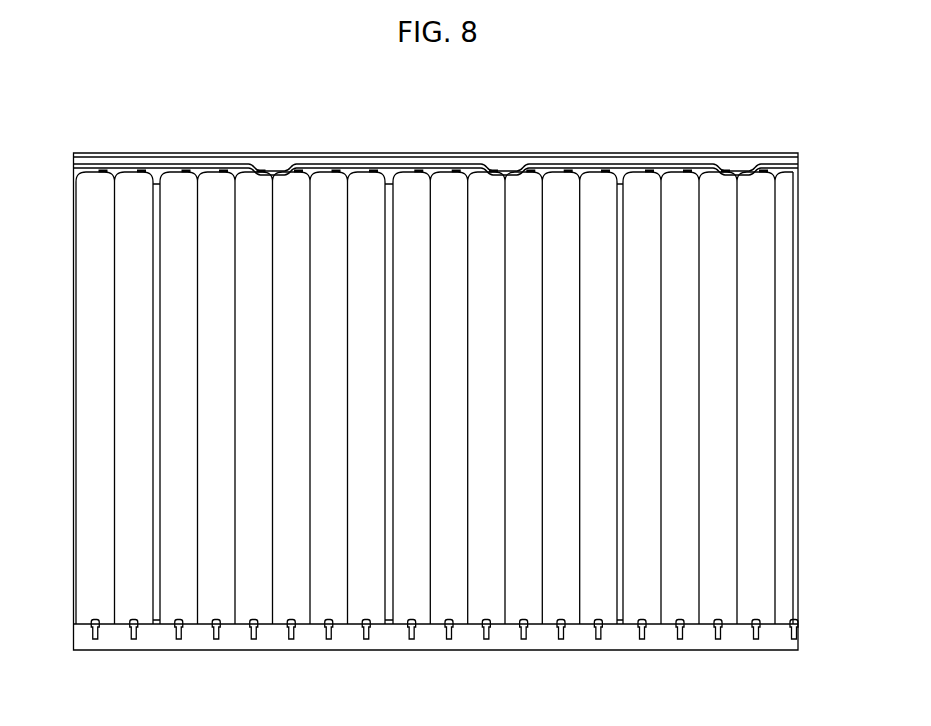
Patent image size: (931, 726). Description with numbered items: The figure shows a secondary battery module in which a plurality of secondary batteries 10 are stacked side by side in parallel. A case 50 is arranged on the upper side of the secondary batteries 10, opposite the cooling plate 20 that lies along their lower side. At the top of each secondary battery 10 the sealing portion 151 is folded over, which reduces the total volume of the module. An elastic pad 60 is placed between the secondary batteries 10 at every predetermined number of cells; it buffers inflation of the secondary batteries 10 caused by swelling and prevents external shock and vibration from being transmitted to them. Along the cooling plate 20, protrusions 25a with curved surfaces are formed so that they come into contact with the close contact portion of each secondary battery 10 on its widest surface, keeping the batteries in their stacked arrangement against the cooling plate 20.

The secondary battery 10 is at (568, 612).
The cooling plate 20 is at (423, 651).
The protrusion 25a is at (500, 632).
The case 50 is at (397, 154).
The elastic pad 60 is at (385, 252).
The sealing portion 151 is at (570, 168).